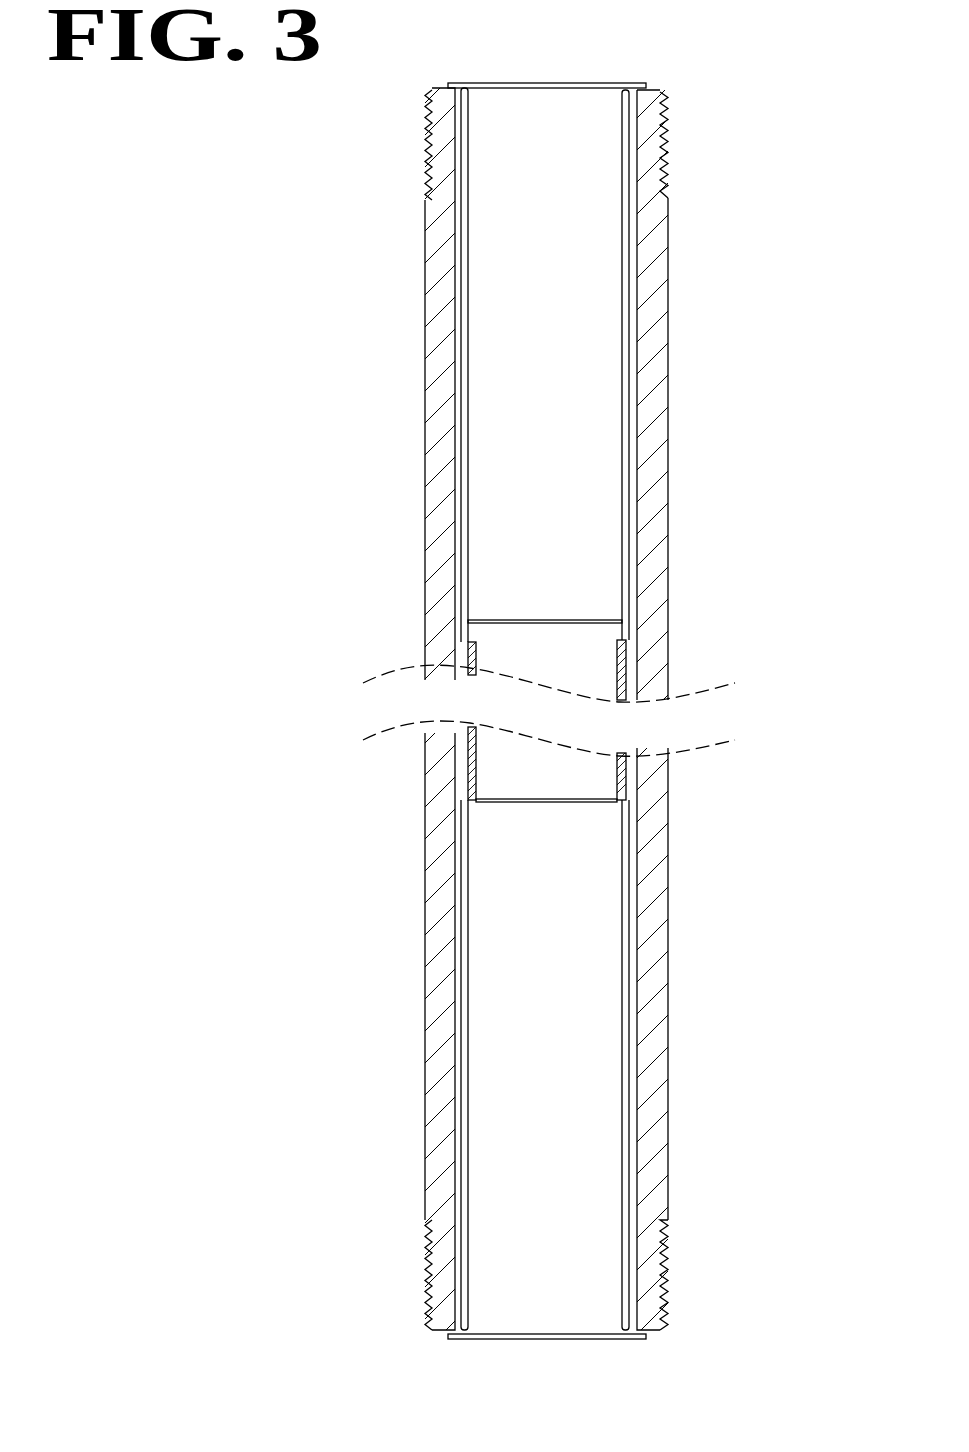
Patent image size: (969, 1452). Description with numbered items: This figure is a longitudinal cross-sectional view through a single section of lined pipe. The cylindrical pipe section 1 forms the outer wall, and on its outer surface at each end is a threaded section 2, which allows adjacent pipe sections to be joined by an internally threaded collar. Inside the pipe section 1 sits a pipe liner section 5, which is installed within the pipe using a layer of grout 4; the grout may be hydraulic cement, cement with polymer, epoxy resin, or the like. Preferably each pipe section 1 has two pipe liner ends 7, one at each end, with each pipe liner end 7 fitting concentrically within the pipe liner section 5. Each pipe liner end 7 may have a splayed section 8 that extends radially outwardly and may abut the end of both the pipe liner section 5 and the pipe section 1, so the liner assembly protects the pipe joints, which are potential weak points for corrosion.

The pipe section 1 is at (668, 390).
The threaded section 2 is at (672, 138).
The layer of grout 4 is at (637, 805).
The pipe liner section 5 is at (627, 652).
The pipe liner end 7 is at (627, 305).
The splayed section 8 is at (633, 1340).